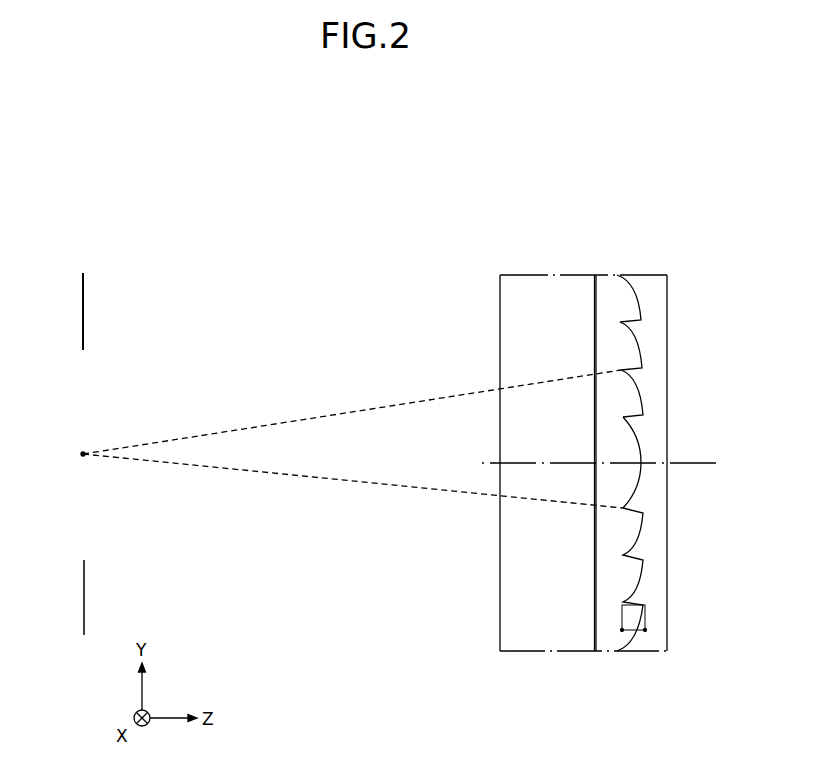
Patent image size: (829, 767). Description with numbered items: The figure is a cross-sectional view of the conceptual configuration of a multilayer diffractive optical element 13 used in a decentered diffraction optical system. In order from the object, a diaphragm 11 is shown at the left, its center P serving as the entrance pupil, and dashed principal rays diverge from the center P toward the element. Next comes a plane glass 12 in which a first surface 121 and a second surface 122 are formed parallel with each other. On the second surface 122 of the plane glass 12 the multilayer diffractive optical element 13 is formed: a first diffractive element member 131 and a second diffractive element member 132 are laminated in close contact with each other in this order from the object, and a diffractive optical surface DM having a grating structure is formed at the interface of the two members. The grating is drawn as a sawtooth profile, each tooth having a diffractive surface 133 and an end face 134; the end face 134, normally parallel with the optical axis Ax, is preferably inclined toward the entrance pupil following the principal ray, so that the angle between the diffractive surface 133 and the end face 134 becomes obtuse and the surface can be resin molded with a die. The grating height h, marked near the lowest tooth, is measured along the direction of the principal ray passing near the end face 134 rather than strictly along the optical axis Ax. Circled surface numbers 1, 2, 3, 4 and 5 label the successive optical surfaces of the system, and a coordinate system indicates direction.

The diaphragm 11 is at (83, 282).
The plane glass 12 is at (507, 268).
The first surface 121 is at (500, 292).
The second surface 122 is at (594, 290).
The multilayer diffractive optical element 13 is at (639, 268).
The first diffractive element member 131 is at (607, 285).
The second diffractive element member 132 is at (660, 289).
The diffractive surface 133 is at (637, 440).
The end face 134 is at (643, 513).
The surface number one 1 is at (82, 318).
The surface number two 2 is at (500, 332).
The surface number three 3 is at (594, 311).
The surface number four 4 is at (641, 345).
The surface number five 5 is at (667, 373).
The diffractive optical surface DM is at (643, 400).
The center of the diaphragm P is at (83, 458).
The optical axis Ax is at (700, 463).
The grating height h is at (634, 618).